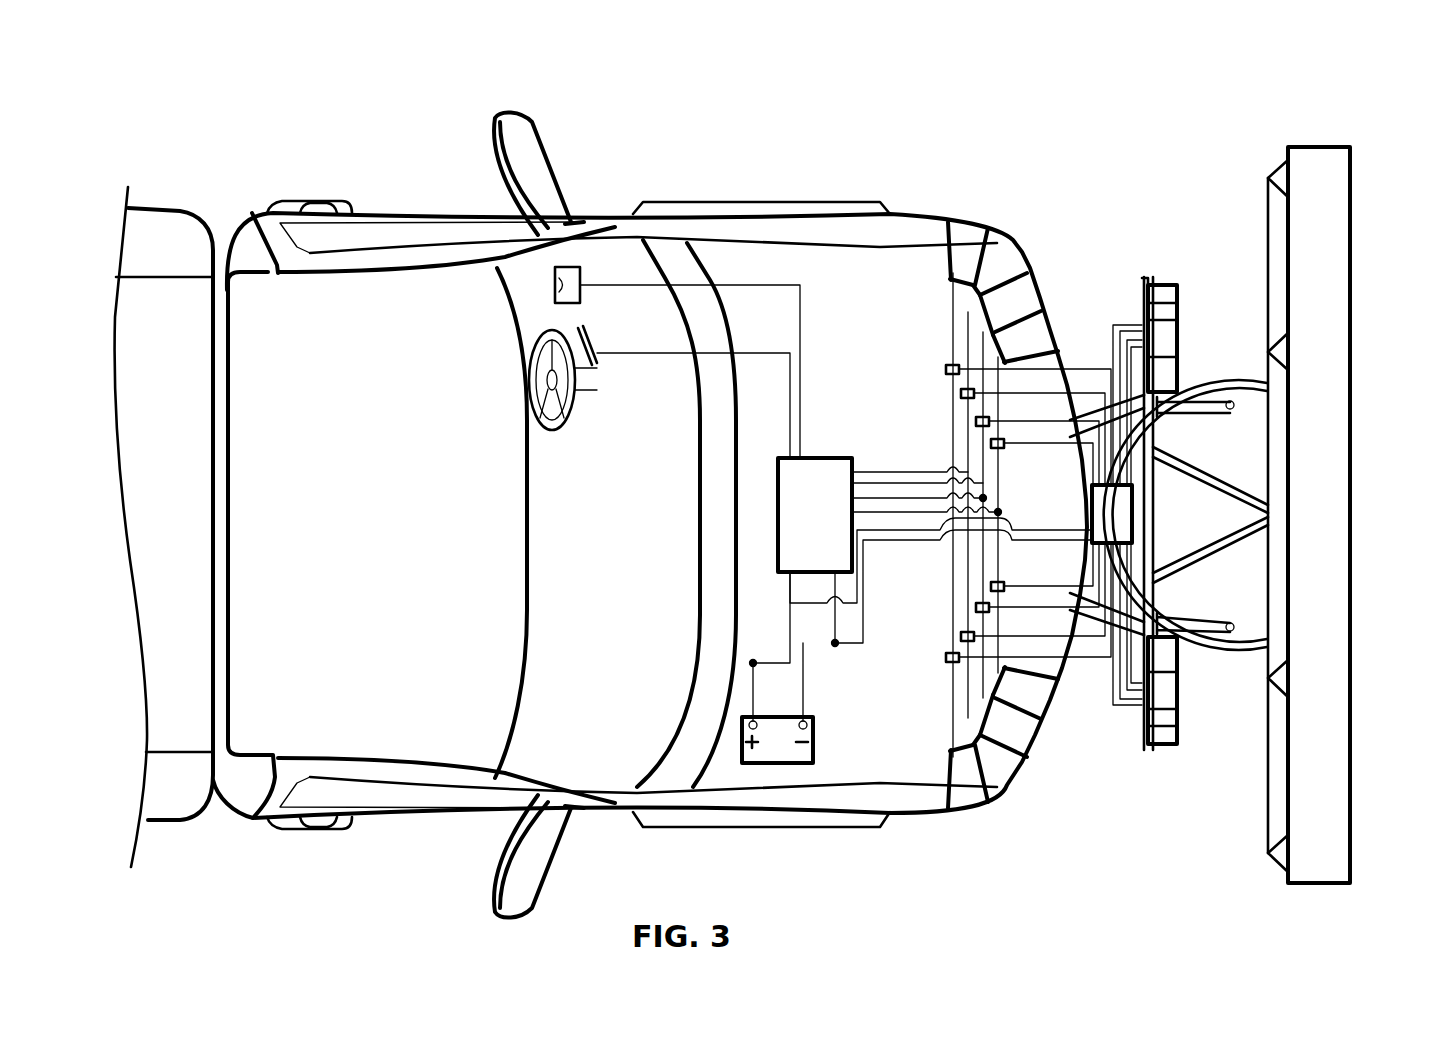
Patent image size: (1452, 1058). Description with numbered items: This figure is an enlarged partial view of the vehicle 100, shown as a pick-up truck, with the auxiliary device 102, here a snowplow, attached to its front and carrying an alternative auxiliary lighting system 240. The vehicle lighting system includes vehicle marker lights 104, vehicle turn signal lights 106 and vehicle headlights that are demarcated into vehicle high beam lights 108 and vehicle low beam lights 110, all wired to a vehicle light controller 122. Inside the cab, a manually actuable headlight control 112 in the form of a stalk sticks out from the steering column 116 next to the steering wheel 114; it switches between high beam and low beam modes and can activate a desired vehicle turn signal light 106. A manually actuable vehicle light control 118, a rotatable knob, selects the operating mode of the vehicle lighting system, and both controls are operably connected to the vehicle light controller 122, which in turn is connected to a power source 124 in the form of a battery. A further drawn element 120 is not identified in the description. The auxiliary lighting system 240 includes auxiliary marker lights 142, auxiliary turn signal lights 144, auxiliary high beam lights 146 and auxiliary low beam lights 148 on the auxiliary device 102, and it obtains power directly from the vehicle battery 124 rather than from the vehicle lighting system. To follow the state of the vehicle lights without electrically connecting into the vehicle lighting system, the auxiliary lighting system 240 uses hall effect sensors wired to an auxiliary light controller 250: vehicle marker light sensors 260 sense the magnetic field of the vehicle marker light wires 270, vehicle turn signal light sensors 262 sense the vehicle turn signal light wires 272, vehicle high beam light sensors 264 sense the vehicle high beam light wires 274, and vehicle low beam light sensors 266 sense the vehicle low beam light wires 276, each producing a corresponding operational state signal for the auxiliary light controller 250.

The vehicle 100 is at (385, 97).
The auxiliary device 102 is at (1352, 132).
The vehicle marker lights 104 is at (950, 255).
The vehicle turn signal lights 106 is at (997, 260).
The vehicle high beam lights 108 is at (1027, 285).
The vehicle low beam lights 110 is at (1055, 320).
The manually actuable headlight control 112 is at (600, 790).
The steering wheel 114 is at (500, 355).
The steering column 116 is at (597, 377).
The manually actuable vehicle light control 118 is at (553, 300).
The control lever 120 is at (562, 322).
The vehicle light controller 122 is at (817, 458).
The power source 124 is at (742, 752).
The auxiliary marker lights 142 is at (1180, 293).
The auxiliary turn signal lights 144 is at (1180, 310).
The auxiliary high beam lights 146 is at (1163, 342).
The auxiliary low beam lights 148 is at (1163, 373).
The auxiliary lighting system 240 is at (1170, 276).
The auxiliary light controller 250 is at (1092, 497).
The vehicle marker light sensors 260 is at (946, 369).
The vehicle turn signal light sensors 262 is at (961, 393).
The vehicle high beam light sensors 264 is at (976, 421).
The vehicle low beam light sensors 266 is at (990, 443).
The vehicle marker light wires 270 is at (953, 275).
The vehicle turn signal light wires 272 is at (967, 312).
The vehicle high beam light wires 274 is at (982, 332).
The vehicle low beam light wires 276 is at (997, 357).